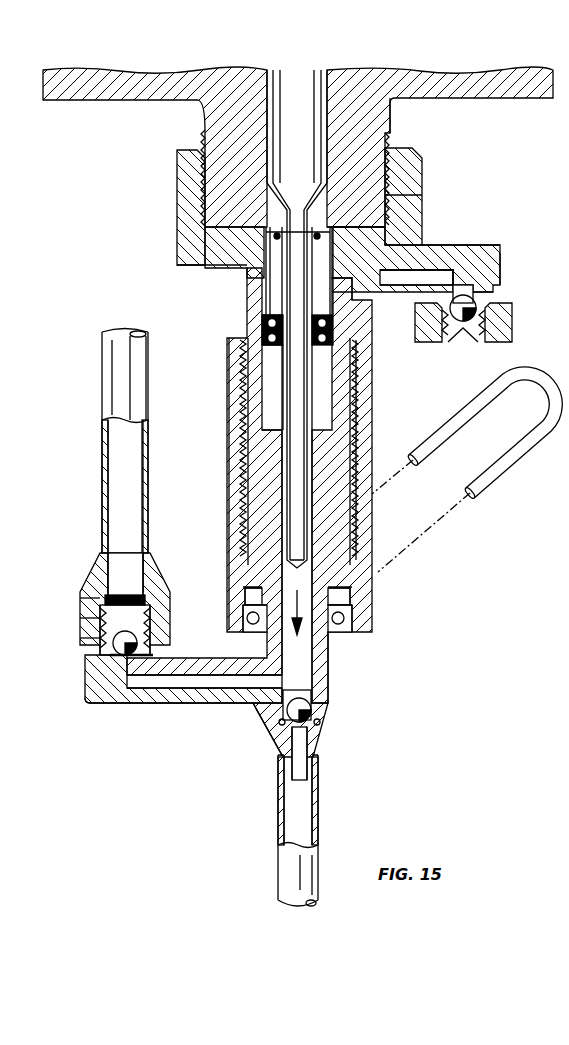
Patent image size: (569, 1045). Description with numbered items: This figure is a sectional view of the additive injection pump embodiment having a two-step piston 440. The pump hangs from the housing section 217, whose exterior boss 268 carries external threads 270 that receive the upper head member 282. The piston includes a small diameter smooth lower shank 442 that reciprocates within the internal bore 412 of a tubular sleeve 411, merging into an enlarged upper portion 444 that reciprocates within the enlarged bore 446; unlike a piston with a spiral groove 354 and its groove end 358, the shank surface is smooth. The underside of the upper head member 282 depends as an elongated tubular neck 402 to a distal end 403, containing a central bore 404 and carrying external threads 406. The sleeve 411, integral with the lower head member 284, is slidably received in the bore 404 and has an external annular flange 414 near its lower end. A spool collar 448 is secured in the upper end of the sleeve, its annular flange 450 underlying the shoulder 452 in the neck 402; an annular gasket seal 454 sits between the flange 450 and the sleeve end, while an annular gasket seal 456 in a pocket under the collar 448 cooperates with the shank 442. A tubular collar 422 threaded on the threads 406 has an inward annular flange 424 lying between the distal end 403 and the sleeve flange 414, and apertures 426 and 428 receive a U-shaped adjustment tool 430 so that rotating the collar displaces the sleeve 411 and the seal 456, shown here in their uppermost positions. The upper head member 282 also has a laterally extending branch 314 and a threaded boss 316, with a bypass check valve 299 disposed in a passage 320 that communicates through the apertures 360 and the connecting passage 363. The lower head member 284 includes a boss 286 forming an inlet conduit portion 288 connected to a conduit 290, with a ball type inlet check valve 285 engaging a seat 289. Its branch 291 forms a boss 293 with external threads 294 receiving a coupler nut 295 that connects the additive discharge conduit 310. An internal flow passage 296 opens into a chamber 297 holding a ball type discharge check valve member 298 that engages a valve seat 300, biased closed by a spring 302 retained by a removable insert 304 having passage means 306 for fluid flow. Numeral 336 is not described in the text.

The housing section 217 is at (540, 98).
The exterior boss 268 is at (396, 118).
The end of the groove 358 is at (388, 142).
The external threads 270 is at (400, 168).
The upper head member 282 is at (177, 188).
The spiral groove 354 is at (395, 198).
The flange bottom 336 is at (200, 243).
The laterally extending apertures 360 is at (373, 240).
The connecting passage 363 is at (425, 250).
The laterally extending branch 314 is at (500, 250).
The passage 320 is at (500, 268).
The externally threaded boss 316 is at (495, 290).
The bypass check valve 299 is at (500, 312).
The enlarged bore 446 is at (283, 88).
The enlarged upper portion 444 is at (322, 80).
The shoulder 452 is at (272, 318).
The annular flange 450 is at (262, 325).
The annular gasket seal 454 is at (340, 300).
The spool collar 448 is at (334, 330).
The central bore 404 is at (240, 345).
The annular gasket seal 456 is at (262, 355).
The external threads 406 is at (360, 350).
The lower shank 442 is at (262, 400).
The tubular neck 402 is at (345, 395).
The two-step piston 440 is at (282, 430).
The tubular collar 422 is at (358, 424).
The additive discharge conduit 310 is at (102, 462).
The U-shaped adjustment tool 430 is at (506, 464).
The tubular sleeve 411 is at (240, 500).
The distal end 403 is at (368, 575).
The removable insert 304 is at (128, 585).
The annular flange 424 is at (255, 580).
The annular flange 414 is at (248, 588).
The passage means 306 is at (146, 600).
The spring 302 is at (150, 622).
The coupler nut 295 is at (80, 600).
The external threads 294 is at (84, 620).
The chamber 297 is at (90, 640).
The discharge check valve member 298 is at (138, 645).
The aperture 426 is at (256, 625).
The boss 293 is at (85, 662).
The aperture 428 is at (338, 628).
The valve seat 300 is at (85, 692).
The lower head member 284 is at (330, 690).
The branch 291 is at (150, 703).
The internal flow passage 296 is at (198, 690).
The inlet check valve 285 is at (313, 709).
The internal bore 412 is at (270, 716).
The seat 289 is at (280, 726).
The boss 286 is at (322, 742).
The inlet conduit portion 288 is at (320, 768).
The conduit 290 is at (278, 886).